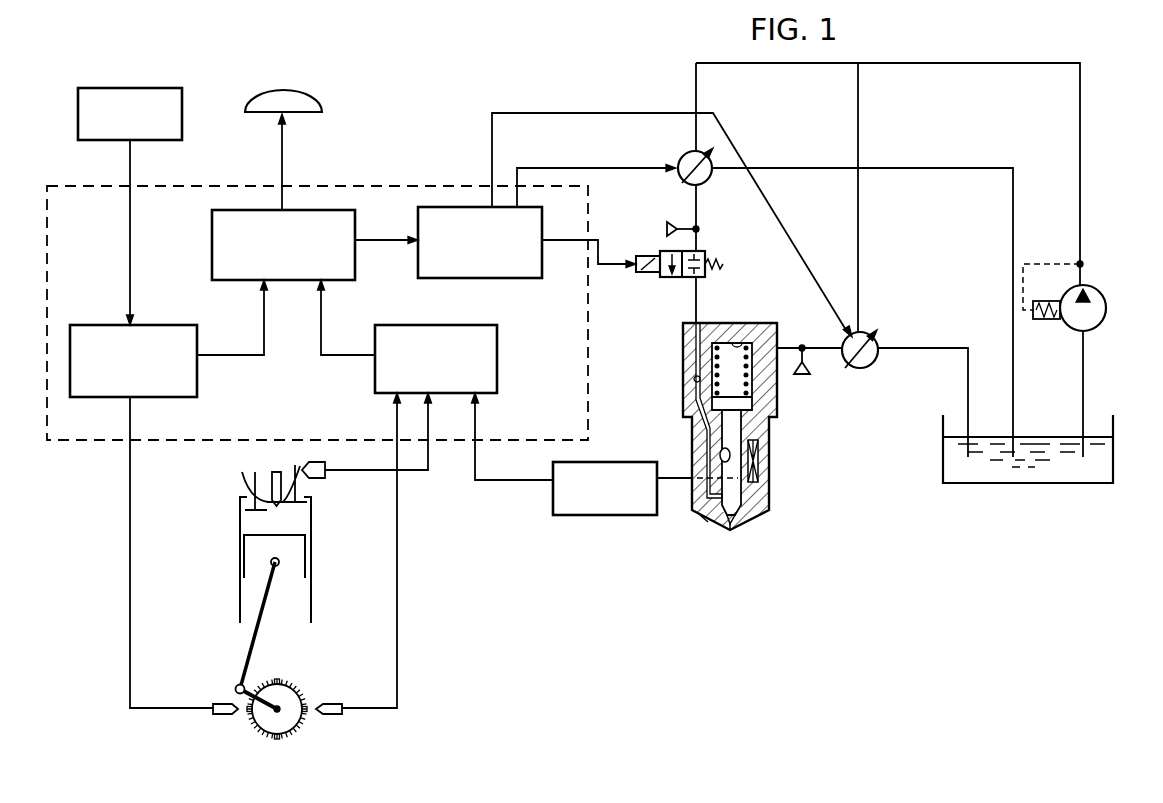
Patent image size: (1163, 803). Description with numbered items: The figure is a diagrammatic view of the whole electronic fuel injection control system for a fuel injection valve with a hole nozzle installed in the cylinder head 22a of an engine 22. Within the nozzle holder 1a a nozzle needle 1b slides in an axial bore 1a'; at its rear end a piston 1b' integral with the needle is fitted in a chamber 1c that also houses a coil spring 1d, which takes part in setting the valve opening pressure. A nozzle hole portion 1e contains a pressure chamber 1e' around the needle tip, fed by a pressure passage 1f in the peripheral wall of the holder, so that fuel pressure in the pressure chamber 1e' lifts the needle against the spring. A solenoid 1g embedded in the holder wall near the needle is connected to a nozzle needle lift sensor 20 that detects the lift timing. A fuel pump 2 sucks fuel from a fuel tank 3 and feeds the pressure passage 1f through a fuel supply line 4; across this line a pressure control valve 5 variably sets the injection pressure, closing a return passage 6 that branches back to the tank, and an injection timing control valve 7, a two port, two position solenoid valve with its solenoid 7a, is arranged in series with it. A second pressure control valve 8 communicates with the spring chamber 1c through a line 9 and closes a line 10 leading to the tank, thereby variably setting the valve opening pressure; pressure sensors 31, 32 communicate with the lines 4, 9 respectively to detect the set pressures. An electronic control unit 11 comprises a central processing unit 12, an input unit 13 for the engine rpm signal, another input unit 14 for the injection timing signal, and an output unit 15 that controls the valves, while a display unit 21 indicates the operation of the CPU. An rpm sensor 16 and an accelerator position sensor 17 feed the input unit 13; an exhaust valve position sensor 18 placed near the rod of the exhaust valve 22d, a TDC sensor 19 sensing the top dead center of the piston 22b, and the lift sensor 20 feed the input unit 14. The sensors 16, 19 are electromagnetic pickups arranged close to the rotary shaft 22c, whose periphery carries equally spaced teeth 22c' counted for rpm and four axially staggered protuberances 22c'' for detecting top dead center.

The nozzle holder 1a is at (787, 462).
The axial bore 1a' is at (682, 443).
The nozzle needle 1b is at (762, 545).
The piston 1b' is at (789, 425).
The chamber 1c is at (737, 345).
The coil spring 1d is at (719, 346).
The nozzle hole portion 1e is at (737, 559).
The pressure chamber 1e' is at (693, 548).
The pressure passage 1f is at (695, 379).
The solenoid 1g is at (767, 458).
The fuel pump 2 is at (1107, 316).
The fuel tank 3 is at (1114, 460).
The fuel supply line 4 is at (964, 63).
The pressure control valve 5 is at (678, 150).
The return passage 6 is at (936, 163).
The injection timing control valve 7 is at (675, 243).
The solenoid of injection timing control valve 7a is at (646, 256).
The pressure control valve 8 is at (866, 330).
The line 9 is at (859, 119).
The line 10 is at (914, 346).
The electronic control unit 11 is at (346, 183).
The central processing unit 12 is at (357, 264).
The input unit 13 is at (198, 380).
The input unit 14 is at (498, 365).
The output unit 15 is at (542, 226).
The rpm sensor 16 is at (220, 717).
The accelerator position sensor 17 is at (183, 118).
The exhaust valve position sensor 18 is at (323, 463).
The TDC sensor 19 is at (333, 716).
The nozzle needle lift sensor 20 is at (610, 517).
The display unit 21 is at (306, 93).
The engine 22 is at (287, 616).
The cylinder head 22a is at (305, 515).
The piston 22b is at (300, 565).
The rotary shaft 22c is at (287, 719).
The teeth 22c' is at (307, 700).
The protuberances 22c'' is at (257, 728).
The exhaust valve 22d is at (300, 506).
The pressure sensor 31 is at (672, 221).
The pressure sensor 32 is at (807, 374).